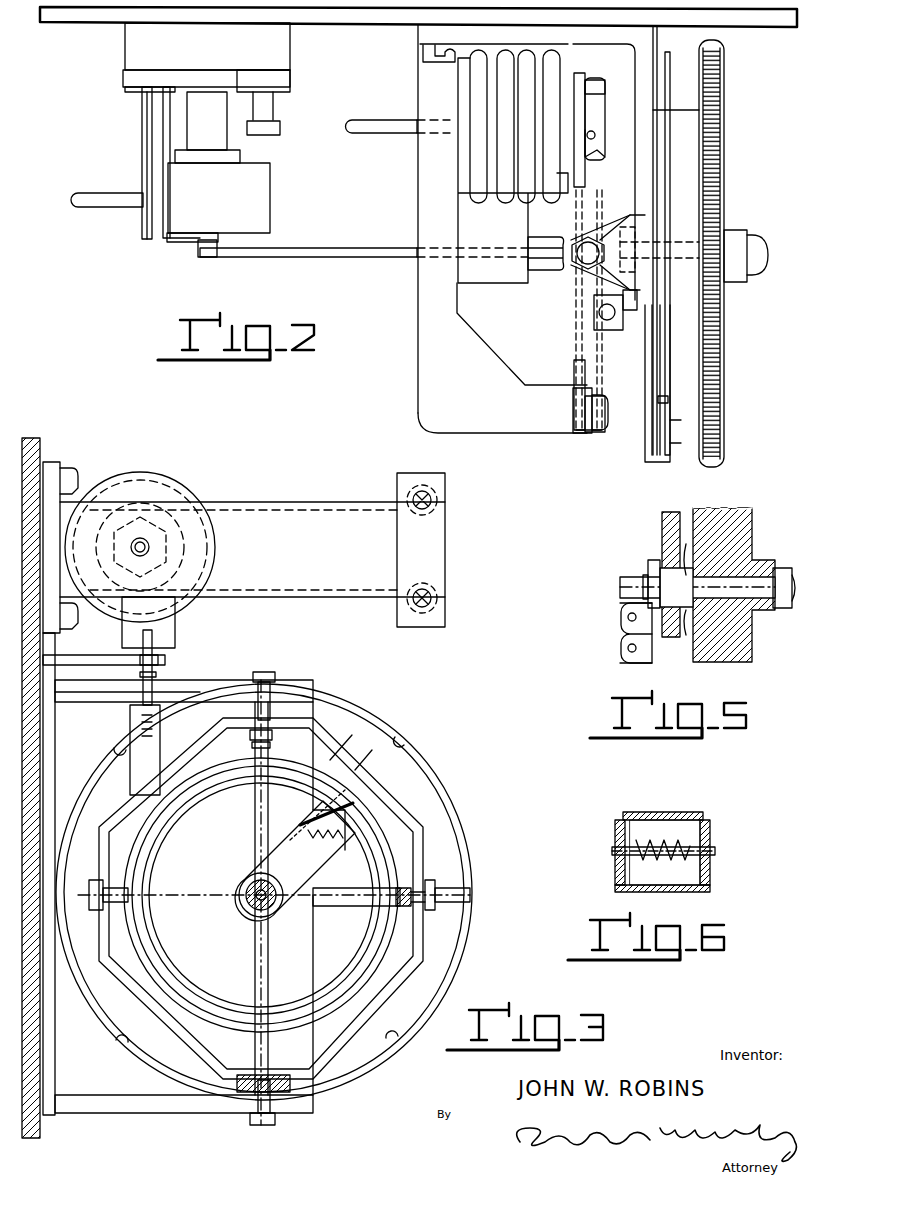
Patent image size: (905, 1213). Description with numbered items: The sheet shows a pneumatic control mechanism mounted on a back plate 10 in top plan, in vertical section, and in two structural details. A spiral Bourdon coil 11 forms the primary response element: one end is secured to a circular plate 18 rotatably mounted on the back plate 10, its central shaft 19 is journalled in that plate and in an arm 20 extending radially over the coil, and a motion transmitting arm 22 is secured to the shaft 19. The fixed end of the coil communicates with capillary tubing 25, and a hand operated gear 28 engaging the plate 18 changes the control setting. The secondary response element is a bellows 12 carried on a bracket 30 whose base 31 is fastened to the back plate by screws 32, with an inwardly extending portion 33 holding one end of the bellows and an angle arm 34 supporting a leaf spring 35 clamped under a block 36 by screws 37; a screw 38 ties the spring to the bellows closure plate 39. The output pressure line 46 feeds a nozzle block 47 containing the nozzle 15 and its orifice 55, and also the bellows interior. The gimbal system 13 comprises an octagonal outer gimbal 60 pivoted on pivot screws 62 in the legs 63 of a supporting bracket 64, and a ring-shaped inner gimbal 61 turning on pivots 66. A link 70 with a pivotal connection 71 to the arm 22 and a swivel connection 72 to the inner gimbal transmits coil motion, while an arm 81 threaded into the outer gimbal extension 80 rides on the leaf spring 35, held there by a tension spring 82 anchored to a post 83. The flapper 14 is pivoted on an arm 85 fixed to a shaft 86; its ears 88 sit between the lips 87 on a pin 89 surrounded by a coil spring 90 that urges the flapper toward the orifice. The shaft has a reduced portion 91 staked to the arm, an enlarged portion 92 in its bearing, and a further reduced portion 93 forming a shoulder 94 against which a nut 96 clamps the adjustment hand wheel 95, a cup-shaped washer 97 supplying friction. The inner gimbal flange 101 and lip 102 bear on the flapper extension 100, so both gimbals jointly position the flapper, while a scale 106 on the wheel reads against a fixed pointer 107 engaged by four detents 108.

In FIG. 2, the back plate 10 is at (62, 24).
In FIG. 3, the back plate 10 is at (34, 438).
In FIG. 2, the spiral Bourdon coil 11 is at (272, 198).
In FIG. 2, the bellows 12 is at (492, 204).
In FIG. 3, the bellows 12 is at (160, 478).
In FIG. 2, the gimbal system 13 is at (571, 332).
In FIG. 3, the gimbal system 13 is at (425, 807).
In FIG. 2, the flapper 14 is at (582, 245).
In FIG. 3, the flapper 14 is at (355, 832).
In FIG. 6, the flapper 14 is at (699, 809).
In FIG. 2, the nozzle 15 is at (550, 270).
In FIG. 3, the nozzle 15 is at (247, 880).
In FIG. 2, the circular plate 18 is at (128, 80).
In FIG. 2, the central shaft 19 is at (207, 236).
In FIG. 2, the arm 20 is at (170, 240).
In FIG. 2, the motion transmitting arm 22 is at (200, 252).
In FIG. 2, the capillary tubing 25 is at (110, 194).
In FIG. 2, the hand operated gear 28 is at (280, 82).
In FIG. 2, the bracket 30 is at (436, 362).
In FIG. 3, the bracket 30 is at (267, 498).
In FIG. 2, the base 31 is at (418, 40).
In FIG. 3, the base 31 is at (52, 462).
In FIG. 2, the screws 32 is at (425, 58).
In FIG. 3, the screws 32 is at (72, 470).
In FIG. 2, the inwardly extending portion 33 is at (418, 300).
In FIG. 2, the angle arm 34 is at (488, 432).
In FIG. 3, the angle arm 34 is at (400, 480).
In FIG. 2, the leaf spring 35 is at (580, 74).
In FIG. 3, the leaf spring 35 is at (312, 598).
In FIG. 2, the block 36 is at (590, 436).
In FIG. 2, the screws 37 is at (606, 425).
In FIG. 3, the screws 37 is at (440, 490).
In FIG. 2, the screw 38 is at (598, 115).
In FIG. 3, the screw 38 is at (138, 525).
In FIG. 2, the closure plate 39 is at (564, 90).
In FIG. 3, the closure plate 39 is at (180, 530).
In FIG. 2, the output pressure line 46 is at (380, 134).
In FIG. 3, the output pressure line 46 is at (147, 552).
In FIG. 2, the nozzle block 47 is at (478, 284).
In FIG. 3, the orifice 55 is at (250, 905).
In FIG. 2, the outer gimbal 60 is at (574, 415).
In FIG. 3, the outer gimbal 60 is at (425, 817).
In FIG. 2, the inner gimbal 61 is at (572, 403).
In FIG. 3, the inner gimbal 61 is at (406, 858).
In FIG. 2, the pivot screws 62 is at (576, 268).
In FIG. 3, the pivot screws 62 is at (276, 676).
In FIG. 3, the legs 63 is at (212, 680).
In FIG. 2, the supporting bracket 64 is at (655, 241).
In FIG. 3, the supporting bracket 64 is at (50, 1045).
In FIG. 5, the supporting bracket 64 is at (670, 512).
In FIG. 2, the pivots 66 is at (598, 84).
In FIG. 3, the pivots 66 is at (95, 880).
In FIG. 2, the link 70 is at (312, 258).
In FIG. 3, the link 70 is at (255, 745).
In FIG. 2, the pivotal connection 71 is at (206, 256).
In FIG. 2, the swivel connection 72 is at (590, 250).
In FIG. 3, the swivel connection 72 is at (250, 735).
In FIG. 3, the extension 80 is at (130, 722).
In FIG. 2, the arm 81 is at (596, 145).
In FIG. 3, the arm 81 is at (154, 668).
In FIG. 3, the tension spring 82 is at (175, 625).
In FIG. 3, the post 83 is at (90, 658).
In FIG. 2, the arm 85 is at (618, 314).
In FIG. 3, the arm 85 is at (235, 888).
In FIG. 5, the arm 85 is at (643, 600).
In FIG. 6, the arm 85 is at (717, 883).
In FIG. 2, the shaft 86 is at (758, 256).
In FIG. 5, the shaft 86 is at (787, 570).
In FIG. 2, the lips 87 is at (612, 328).
In FIG. 3, the lips 87 is at (312, 822).
In FIG. 5, the lips 87 is at (618, 634).
In FIG. 6, the lips 87 is at (614, 838).
In FIG. 3, the ears 88 is at (290, 850).
In FIG. 6, the ears 88 is at (680, 812).
In FIG. 2, the pin 89 is at (610, 280).
In FIG. 3, the pin 89 is at (300, 828).
In FIG. 6, the pin 89 is at (612, 851).
In FIG. 3, the coil spring 90 is at (340, 846).
In FIG. 6, the coil spring 90 is at (662, 856).
In FIG. 5, the reduced portion 91 is at (644, 582).
In FIG. 5, the enlarged portion 92 is at (654, 560).
In FIG. 5, the reduced portion 93 is at (697, 588).
In FIG. 5, the shoulder 94 is at (722, 614).
In FIG. 2, the adjustment hand wheel 95 is at (729, 88).
In FIG. 3, the adjustment hand wheel 95 is at (377, 701).
In FIG. 5, the adjustment hand wheel 95 is at (755, 522).
In FIG. 2, the nut 96 is at (756, 242).
In FIG. 5, the nut 96 is at (780, 600).
In FIG. 2, the cup-shaped washer 97 is at (667, 225).
In FIG. 5, the cup-shaped washer 97 is at (688, 548).
In FIG. 3, the extension 100 is at (358, 770).
In FIG. 3, the flange 101 is at (334, 758).
In FIG. 2, the lip 102 is at (574, 380).
In FIG. 3, the lip 102 is at (380, 948).
In FIG. 2, the scale 106 is at (700, 430).
In FIG. 2, the pointer 107 is at (652, 458).
In FIG. 3, the pointer 107 is at (465, 895).
In FIG. 2, the detents 108 is at (652, 110).
In FIG. 3, the detents 108 is at (118, 756).